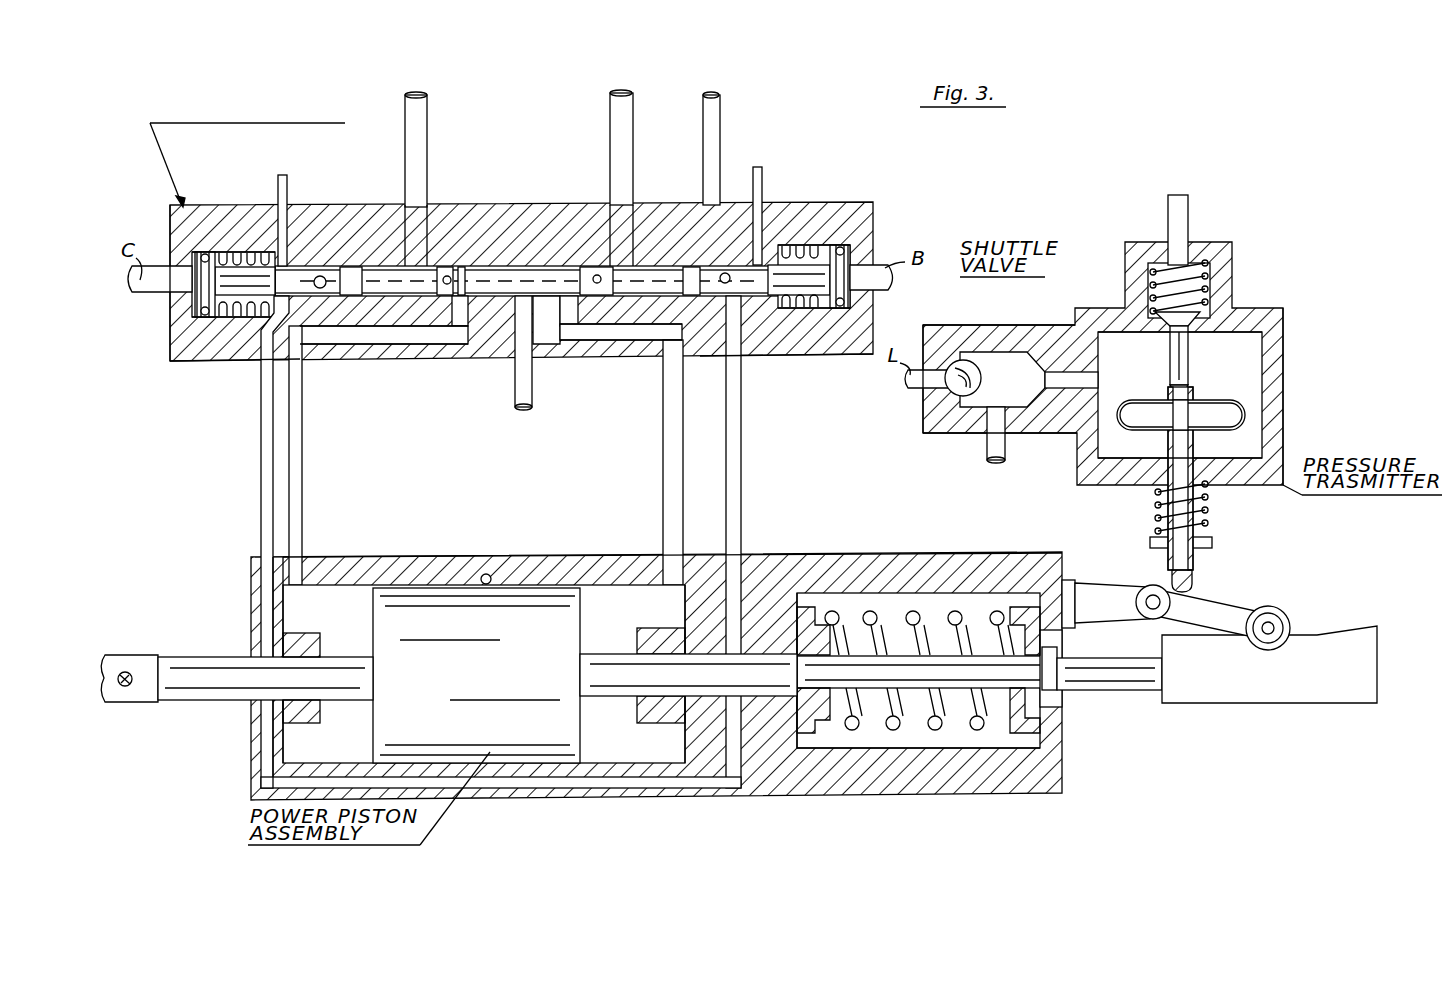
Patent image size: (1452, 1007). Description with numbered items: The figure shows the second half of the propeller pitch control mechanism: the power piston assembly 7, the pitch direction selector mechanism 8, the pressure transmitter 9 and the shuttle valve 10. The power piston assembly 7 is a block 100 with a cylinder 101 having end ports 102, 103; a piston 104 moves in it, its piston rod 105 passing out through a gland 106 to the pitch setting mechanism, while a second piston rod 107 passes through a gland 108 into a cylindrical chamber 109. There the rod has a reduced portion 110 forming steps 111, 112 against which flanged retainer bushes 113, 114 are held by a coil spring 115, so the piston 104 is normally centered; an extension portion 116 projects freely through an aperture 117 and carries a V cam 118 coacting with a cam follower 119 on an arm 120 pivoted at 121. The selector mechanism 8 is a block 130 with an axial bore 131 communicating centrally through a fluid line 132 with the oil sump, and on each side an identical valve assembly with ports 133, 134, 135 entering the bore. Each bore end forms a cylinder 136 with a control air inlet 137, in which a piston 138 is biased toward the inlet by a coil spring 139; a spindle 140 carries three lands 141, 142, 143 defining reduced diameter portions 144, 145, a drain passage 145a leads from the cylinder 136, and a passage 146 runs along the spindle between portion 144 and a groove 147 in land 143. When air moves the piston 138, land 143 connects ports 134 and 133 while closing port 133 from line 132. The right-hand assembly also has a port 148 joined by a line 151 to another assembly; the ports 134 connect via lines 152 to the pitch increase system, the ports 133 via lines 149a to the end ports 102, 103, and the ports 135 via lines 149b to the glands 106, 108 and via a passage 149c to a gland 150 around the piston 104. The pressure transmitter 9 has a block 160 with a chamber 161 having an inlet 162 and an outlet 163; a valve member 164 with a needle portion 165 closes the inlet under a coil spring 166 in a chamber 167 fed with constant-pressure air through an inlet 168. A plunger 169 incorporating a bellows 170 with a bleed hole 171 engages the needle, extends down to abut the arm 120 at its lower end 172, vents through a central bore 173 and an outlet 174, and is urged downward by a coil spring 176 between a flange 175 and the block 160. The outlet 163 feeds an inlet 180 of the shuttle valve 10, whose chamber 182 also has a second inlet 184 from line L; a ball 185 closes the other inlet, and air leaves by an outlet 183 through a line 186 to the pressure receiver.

The power piston assembly 7 is at (572, 550).
The pitch direction selector mechanism 8 is at (178, 204).
The pressure transmitter 9 is at (1295, 395).
The shuttle valve 10 is at (983, 322).
The block 100 is at (435, 558).
The cylinder 101 is at (350, 610).
The end port 102 is at (615, 565).
The end port 103 is at (315, 585).
The piston 104 is at (515, 615).
The piston rod 105 is at (215, 670).
The gland 106 is at (250, 705).
The second piston rod 107 is at (598, 682).
The gland 108 is at (748, 650).
The cylindrical chamber 109 is at (893, 608).
The portion of reduced diameter 110 is at (915, 722).
The step 111 is at (797, 700).
The step 112 is at (1055, 690).
The flanged retainer bush 113 is at (797, 722).
The flanged retainer bush 114 is at (1045, 735).
The coil spring 115 is at (1010, 748).
The extension portion 116 is at (1127, 678).
The aperture 117 is at (1050, 640).
The V cam 118 is at (1245, 690).
The cam follower 119 is at (1290, 620).
The arm 120 is at (1235, 610).
The pivot 121 is at (1140, 595).
The block 130 is at (500, 348).
The axial bore 131 is at (545, 262).
The fluid line 132 is at (527, 410).
The port 133 is at (457, 330).
The port 134 is at (420, 215).
The port 135 is at (250, 340).
The cylinder 136 is at (210, 252).
The inlet 137 is at (178, 292).
The piston 138 is at (195, 315).
The coil spring 139 is at (230, 318).
The spindle 140 is at (300, 272).
The land 141 is at (205, 232).
The land 142 is at (352, 282).
The land 143 is at (445, 265).
The reduced diameter portion 144 is at (286, 205).
The reduced diameter portion 145 is at (385, 292).
The drain passage 145a is at (258, 262).
The passage 146 is at (450, 285).
The groove 147 is at (500, 268).
The port 148 is at (697, 250).
The lines 149a is at (297, 465).
The lines 149b is at (265, 460).
The passage 149c is at (580, 780).
The gland 150 is at (487, 575).
The line 151 is at (712, 110).
The lines 152 is at (420, 115).
The block 160 is at (1285, 365).
The chamber 161 is at (1250, 345).
The inlet 162 is at (1240, 328).
The outlet 163 is at (1078, 418).
The valve member 164 is at (1200, 318).
The needle portion 165 is at (1175, 360).
The coil spring 166 is at (1232, 268).
The chamber 167 is at (1150, 282).
The inlet 168 is at (1182, 232).
The plunger 169 is at (1205, 465).
The bellows 170 is at (1250, 425).
The bleed hole 171 is at (1200, 398).
The lower end 172 is at (1195, 582).
The central bore 173 is at (1200, 515).
The outlet 174 is at (1205, 545).
The flange 175 is at (1155, 535).
The coil spring 176 is at (1156, 508).
The inlet 180 is at (1075, 322).
The chamber 182 is at (1005, 355).
The outlet 183 is at (975, 432).
The second inlet 184 is at (940, 380).
The ball 185 is at (952, 393).
The line 186 is at (993, 452).